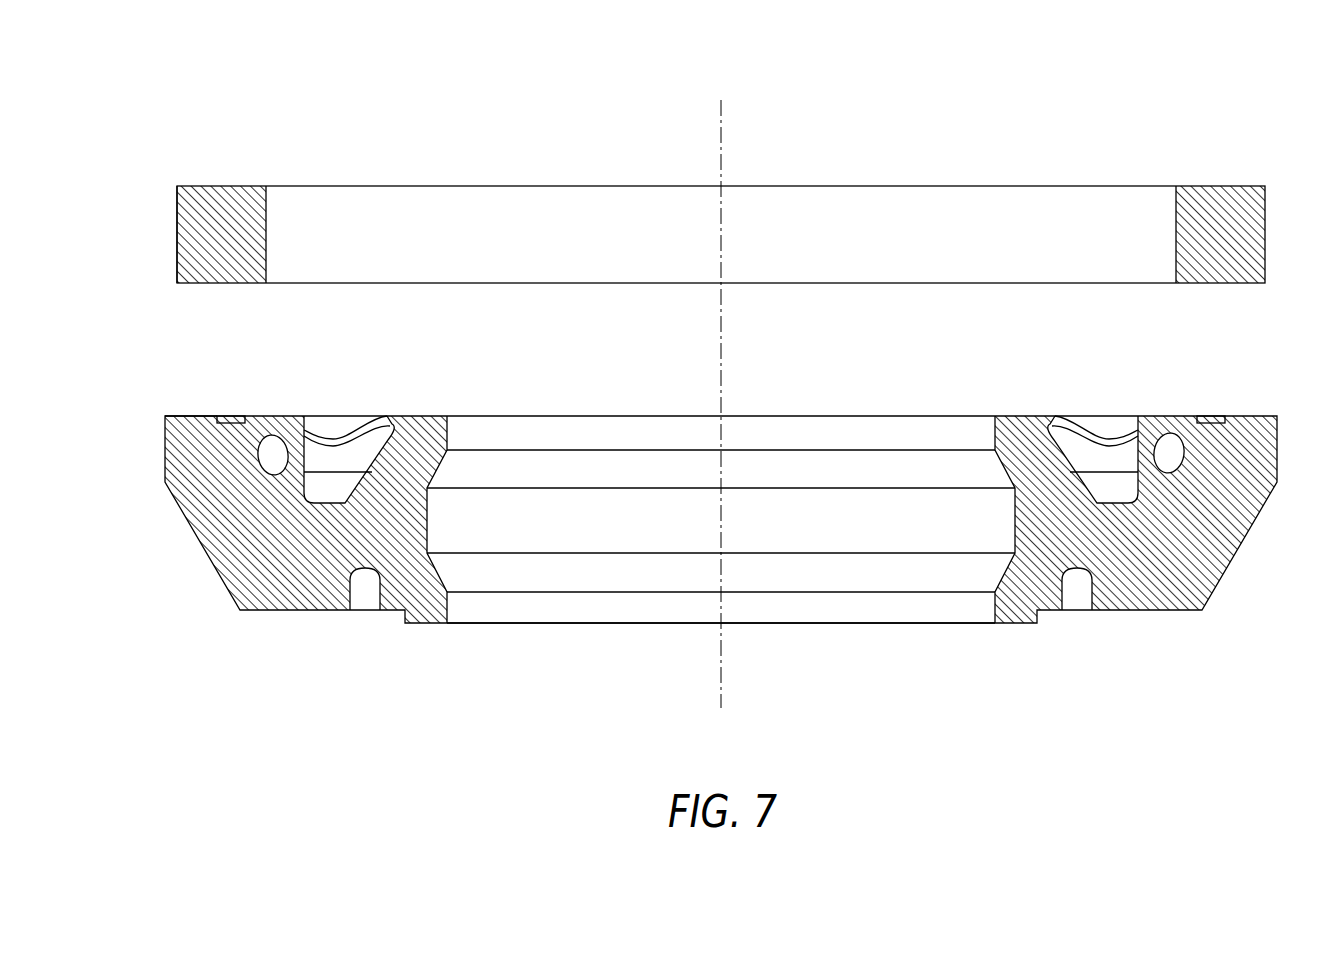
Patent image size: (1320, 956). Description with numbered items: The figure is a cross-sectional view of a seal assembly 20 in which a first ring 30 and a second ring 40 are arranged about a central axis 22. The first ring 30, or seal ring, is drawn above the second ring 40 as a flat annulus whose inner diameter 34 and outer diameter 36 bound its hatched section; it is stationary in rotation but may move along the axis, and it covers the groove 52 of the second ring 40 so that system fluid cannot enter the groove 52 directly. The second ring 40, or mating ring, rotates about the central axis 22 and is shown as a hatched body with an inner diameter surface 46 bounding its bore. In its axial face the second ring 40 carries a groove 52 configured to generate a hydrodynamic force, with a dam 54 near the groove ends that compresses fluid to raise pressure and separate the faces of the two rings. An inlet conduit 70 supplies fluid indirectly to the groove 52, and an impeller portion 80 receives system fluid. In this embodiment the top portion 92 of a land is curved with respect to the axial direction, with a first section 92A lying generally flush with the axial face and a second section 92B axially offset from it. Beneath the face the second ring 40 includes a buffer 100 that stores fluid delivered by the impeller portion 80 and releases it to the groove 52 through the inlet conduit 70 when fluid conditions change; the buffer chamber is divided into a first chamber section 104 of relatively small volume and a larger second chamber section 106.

The seal assembly 20 is at (1032, 103).
The central axis 22 is at (720, 118).
The first ring 30 is at (660, 478).
The inner diameter 34 is at (266, 215).
The outer diameter 36 is at (177, 215).
The second ring 40 is at (1177, 625).
The inner diameter surface 46 is at (567, 605).
The groove 52 is at (228, 416).
The dam 54 is at (190, 416).
The inlet conduit 70 is at (268, 440).
The impeller portion 80 is at (1053, 426).
The top portion 92 is at (369, 381).
The first section 92A is at (380, 420).
The second section 92B is at (320, 418).
The buffer 100 is at (309, 497).
The first chamber section 104 is at (328, 490).
The second chamber section 106 is at (1116, 490).